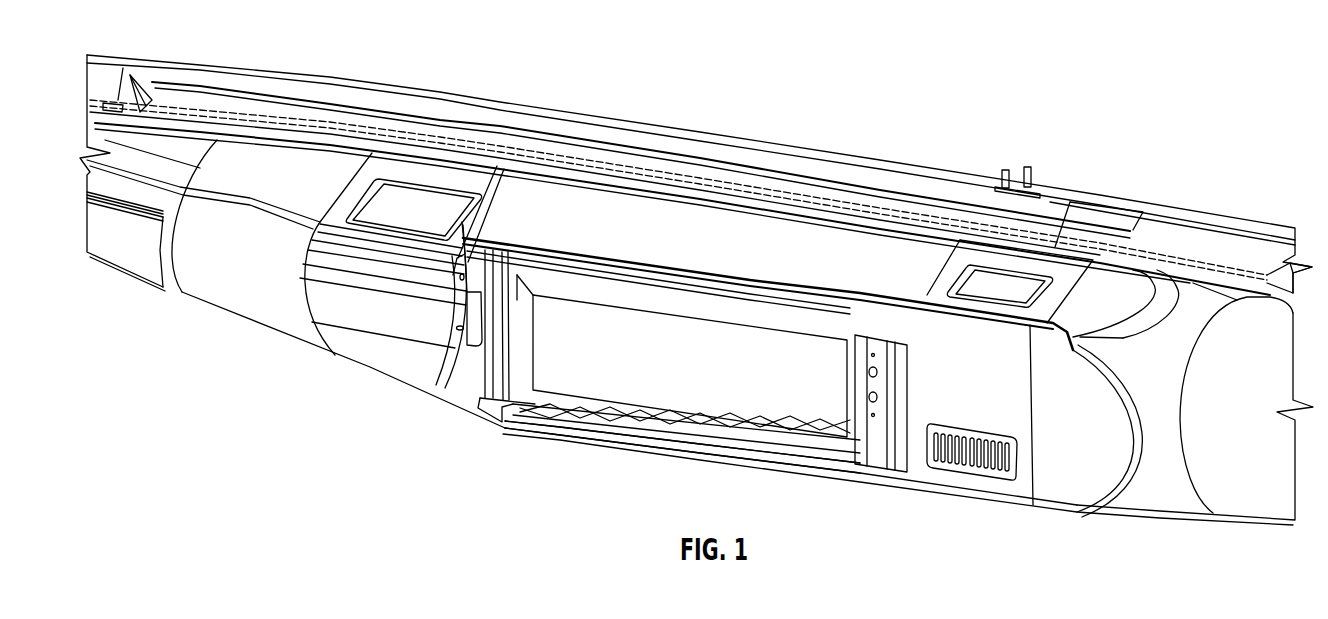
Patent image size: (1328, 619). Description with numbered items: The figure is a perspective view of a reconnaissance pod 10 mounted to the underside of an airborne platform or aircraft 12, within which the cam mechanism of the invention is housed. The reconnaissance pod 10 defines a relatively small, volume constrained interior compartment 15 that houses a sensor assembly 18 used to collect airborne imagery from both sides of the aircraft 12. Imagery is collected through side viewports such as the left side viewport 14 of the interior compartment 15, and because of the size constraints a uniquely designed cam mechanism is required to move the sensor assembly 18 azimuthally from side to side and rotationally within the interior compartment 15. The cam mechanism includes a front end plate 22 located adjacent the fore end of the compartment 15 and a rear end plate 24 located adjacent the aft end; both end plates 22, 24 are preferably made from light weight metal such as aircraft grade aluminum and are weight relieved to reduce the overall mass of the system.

The reconnaissance pod 10 is at (371, 367).
The aircraft 12 is at (472, 98).
The left side viewport 14 is at (678, 437).
The interior compartment 15 is at (862, 448).
The sensor assembly 18 is at (640, 383).
The front end plate 22 is at (508, 380).
The rear end plate 24 is at (869, 336).